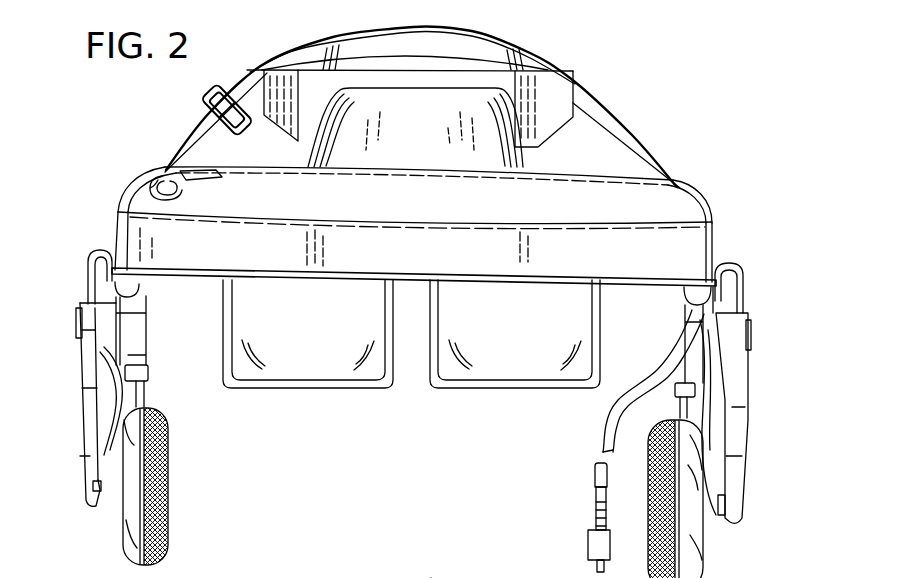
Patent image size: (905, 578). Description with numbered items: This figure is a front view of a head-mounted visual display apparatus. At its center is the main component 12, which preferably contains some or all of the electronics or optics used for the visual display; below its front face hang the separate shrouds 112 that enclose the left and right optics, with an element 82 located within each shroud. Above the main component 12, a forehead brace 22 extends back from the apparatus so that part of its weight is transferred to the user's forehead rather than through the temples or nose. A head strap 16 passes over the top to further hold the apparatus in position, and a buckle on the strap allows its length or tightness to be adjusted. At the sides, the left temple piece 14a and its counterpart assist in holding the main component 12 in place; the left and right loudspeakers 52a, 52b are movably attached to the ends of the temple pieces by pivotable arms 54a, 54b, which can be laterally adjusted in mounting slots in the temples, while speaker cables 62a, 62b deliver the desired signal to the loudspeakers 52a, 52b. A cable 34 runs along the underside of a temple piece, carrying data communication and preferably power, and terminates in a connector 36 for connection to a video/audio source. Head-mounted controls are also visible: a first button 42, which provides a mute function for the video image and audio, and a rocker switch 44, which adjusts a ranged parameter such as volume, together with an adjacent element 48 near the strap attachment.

The main component 12 is at (718, 167).
The left temple piece 14a is at (128, 293).
The head strap 16 is at (430, 577).
The forehead brace 22 is at (422, 111).
The cable 34 is at (607, 423).
The connector 36 is at (590, 545).
The first button 42 is at (170, 160).
The rocker switch 44 is at (147, 185).
The strap fastener 48 is at (206, 180).
The left loudspeaker 52a is at (110, 516).
The right loudspeaker 52b is at (703, 535).
The left pivotable arm 54a is at (80, 377).
The right pivotable arm 54b is at (742, 390).
The left speaker cable 62a is at (90, 262).
The right speaker cable 62b is at (740, 277).
The display lens 82 is at (334, 375).
The shroud 112 is at (250, 388).